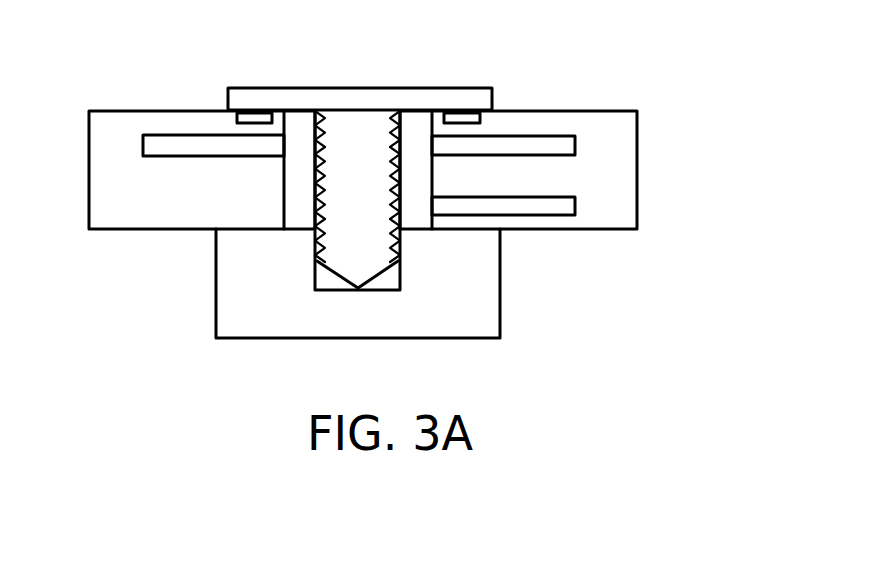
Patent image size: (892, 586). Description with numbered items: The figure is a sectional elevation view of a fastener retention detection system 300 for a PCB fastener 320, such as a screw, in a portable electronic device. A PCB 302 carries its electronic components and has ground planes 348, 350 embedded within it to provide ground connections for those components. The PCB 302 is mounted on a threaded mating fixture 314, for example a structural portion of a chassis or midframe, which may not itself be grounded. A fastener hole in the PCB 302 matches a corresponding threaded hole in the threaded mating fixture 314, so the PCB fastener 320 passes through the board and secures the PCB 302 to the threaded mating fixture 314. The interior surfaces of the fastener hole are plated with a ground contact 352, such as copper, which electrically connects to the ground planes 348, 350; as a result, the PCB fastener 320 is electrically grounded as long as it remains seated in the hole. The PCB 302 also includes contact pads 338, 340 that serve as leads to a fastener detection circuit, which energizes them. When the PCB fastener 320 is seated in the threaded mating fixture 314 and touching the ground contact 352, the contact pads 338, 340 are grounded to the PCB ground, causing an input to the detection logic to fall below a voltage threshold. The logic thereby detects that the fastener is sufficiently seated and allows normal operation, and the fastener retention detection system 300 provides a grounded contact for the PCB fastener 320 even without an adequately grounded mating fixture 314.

The fastener retention detection system 300 is at (632, 95).
The PCB 302 is at (220, 197).
The threaded mating fixture 314 is at (288, 299).
The PCB fastener 320 is at (377, 194).
The contact pad 338 is at (227, 117).
The contact pad 340 is at (468, 117).
The ground plane 348 is at (165, 146).
The ground plane 350 is at (533, 207).
The ground contact 352 is at (293, 128).